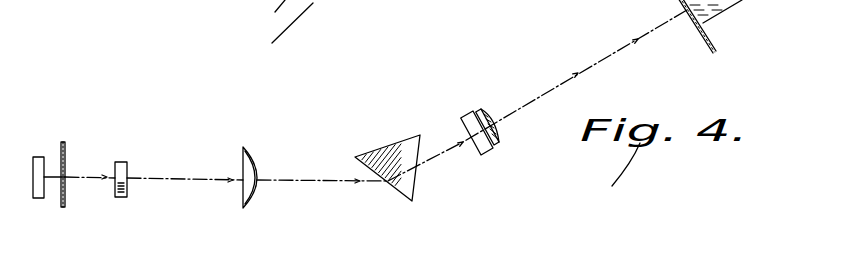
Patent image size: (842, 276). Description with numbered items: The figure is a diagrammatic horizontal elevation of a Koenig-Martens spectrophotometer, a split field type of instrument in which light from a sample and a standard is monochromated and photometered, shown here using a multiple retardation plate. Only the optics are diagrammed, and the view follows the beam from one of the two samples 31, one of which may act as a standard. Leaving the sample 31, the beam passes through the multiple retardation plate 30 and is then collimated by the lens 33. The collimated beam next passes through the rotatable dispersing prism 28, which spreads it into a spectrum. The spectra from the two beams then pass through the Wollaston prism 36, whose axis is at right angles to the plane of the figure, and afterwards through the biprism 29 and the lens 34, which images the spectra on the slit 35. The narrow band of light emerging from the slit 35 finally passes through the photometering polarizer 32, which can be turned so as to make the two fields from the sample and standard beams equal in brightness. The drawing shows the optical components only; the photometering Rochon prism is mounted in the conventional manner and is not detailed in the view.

The rotatable dispersing prism 28 is at (407, 188).
The biprism 29 is at (462, 129).
The multiple retardation plate 30 is at (127, 162).
The sample 31 is at (38, 198).
The photometering polarizer 32 is at (723, 9).
The lens 33 is at (256, 186).
The lens 34 is at (494, 105).
The slit 35 is at (689, 12).
The Wollaston prism 36 is at (484, 153).